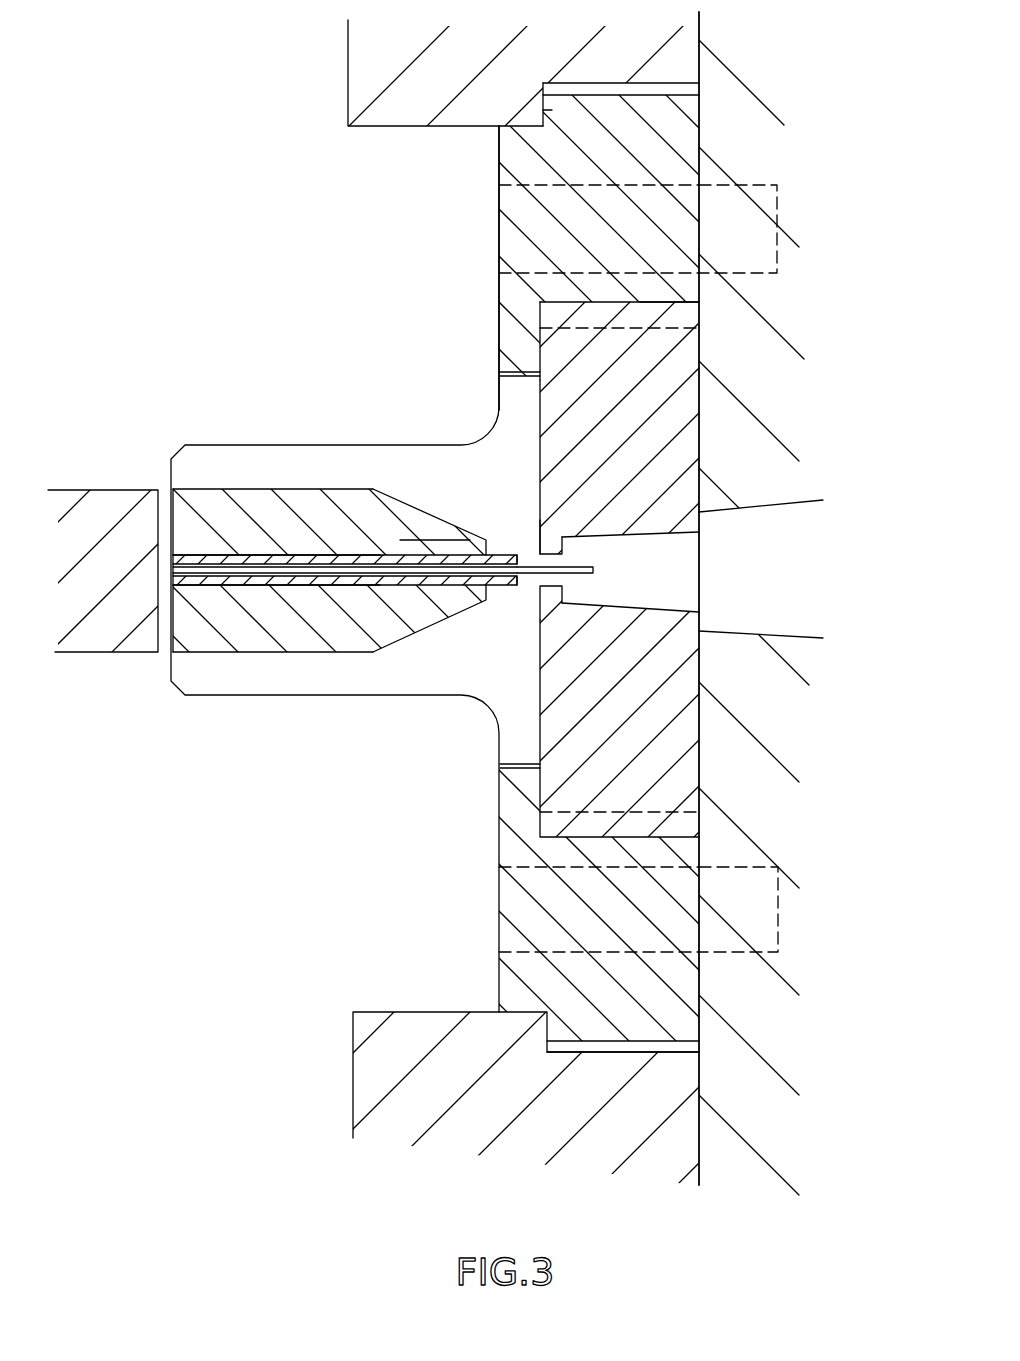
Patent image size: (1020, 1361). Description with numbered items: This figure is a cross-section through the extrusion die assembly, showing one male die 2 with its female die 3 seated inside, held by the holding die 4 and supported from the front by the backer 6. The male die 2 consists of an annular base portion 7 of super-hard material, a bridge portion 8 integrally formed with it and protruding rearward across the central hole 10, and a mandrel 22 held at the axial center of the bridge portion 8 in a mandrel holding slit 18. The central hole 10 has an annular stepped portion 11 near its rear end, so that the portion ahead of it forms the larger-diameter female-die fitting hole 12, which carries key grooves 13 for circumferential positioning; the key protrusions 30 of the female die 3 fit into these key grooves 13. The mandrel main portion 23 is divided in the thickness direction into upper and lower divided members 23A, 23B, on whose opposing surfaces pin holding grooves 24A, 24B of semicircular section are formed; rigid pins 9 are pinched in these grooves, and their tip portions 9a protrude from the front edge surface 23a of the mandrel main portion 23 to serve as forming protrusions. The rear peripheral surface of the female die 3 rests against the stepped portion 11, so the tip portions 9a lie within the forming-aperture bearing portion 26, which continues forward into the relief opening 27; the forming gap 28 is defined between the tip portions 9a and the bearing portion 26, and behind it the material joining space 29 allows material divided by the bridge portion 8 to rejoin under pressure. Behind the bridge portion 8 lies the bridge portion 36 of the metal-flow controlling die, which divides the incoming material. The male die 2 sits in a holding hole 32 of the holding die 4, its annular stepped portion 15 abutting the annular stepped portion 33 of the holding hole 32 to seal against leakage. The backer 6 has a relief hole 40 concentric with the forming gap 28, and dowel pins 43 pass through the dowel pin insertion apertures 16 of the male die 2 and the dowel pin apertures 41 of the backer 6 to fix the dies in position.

The male die 2 is at (512, 804).
The female die 3 is at (663, 757).
The holding die 4 is at (368, 75).
The backer 6 is at (732, 60).
The annular base portion 7 is at (497, 170).
The bridge portion 8 is at (226, 490).
The rigid pin 9 is at (443, 586).
The tip portion 9a is at (537, 575).
The central hole 10 is at (513, 373).
The annular stepped portion 11 is at (543, 350).
The female-die fitting hole 12 is at (653, 302).
The key groove 13 is at (642, 302).
The annular stepped portion 15 is at (545, 108).
The dowel pin insertion aperture 16 is at (598, 180).
The mandrel holding slit 18 is at (196, 556).
The mandrel 22 is at (409, 550).
The mandrel main portion 23 is at (217, 593).
The upper divided member 23A is at (382, 553).
The lower divided member 23B is at (303, 582).
The front edge surface 23a is at (520, 566).
The pin holding groove 24A is at (272, 580).
The pin holding groove 24B is at (248, 566).
The forming-aperture bearing portion 26 is at (550, 594).
The relief opening 27 is at (638, 608).
The forming gap 28 is at (563, 560).
The material joining space 29 is at (520, 540).
The key protrusion 30 is at (614, 300).
The holding hole 32 is at (614, 84).
The annular stepped portion 33 is at (544, 113).
The bridge portion 36 is at (102, 503).
The relief hole 40 is at (745, 503).
The dowel pin aperture 41 is at (742, 197).
The dowel pin 43 is at (655, 197).